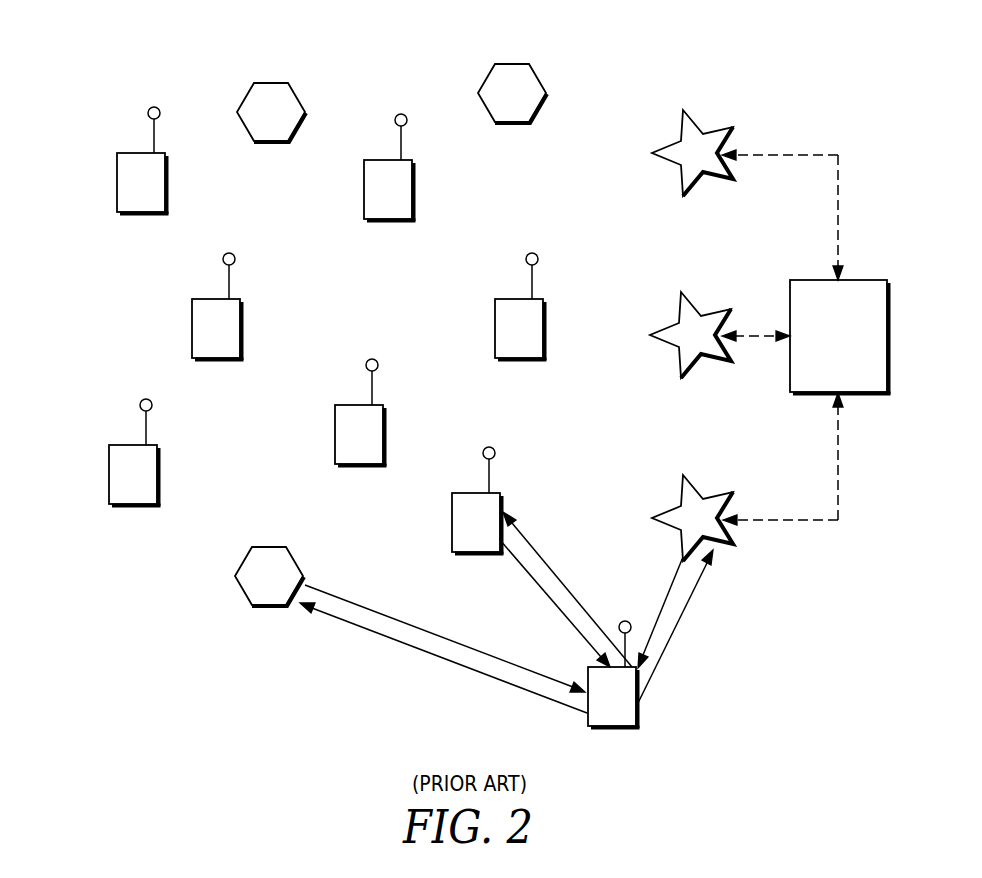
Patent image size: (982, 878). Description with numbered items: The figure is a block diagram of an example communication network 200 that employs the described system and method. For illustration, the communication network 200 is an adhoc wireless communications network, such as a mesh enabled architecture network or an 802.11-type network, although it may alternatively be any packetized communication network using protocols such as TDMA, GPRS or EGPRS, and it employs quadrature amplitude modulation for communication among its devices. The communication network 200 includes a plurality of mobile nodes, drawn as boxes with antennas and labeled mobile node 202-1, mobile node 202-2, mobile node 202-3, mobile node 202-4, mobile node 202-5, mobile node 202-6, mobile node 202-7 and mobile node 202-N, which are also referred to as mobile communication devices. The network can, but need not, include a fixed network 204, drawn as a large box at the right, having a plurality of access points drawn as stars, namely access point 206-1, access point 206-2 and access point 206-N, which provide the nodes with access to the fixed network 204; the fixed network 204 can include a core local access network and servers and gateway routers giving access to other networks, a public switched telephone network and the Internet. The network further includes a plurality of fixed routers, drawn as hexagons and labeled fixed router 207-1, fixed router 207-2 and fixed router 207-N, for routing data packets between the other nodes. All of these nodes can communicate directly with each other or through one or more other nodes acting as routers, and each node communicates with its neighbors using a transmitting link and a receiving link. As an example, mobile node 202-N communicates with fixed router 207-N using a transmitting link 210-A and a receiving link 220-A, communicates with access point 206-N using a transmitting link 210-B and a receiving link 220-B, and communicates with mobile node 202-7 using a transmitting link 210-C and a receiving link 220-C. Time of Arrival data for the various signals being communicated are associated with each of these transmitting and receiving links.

The communication network 200 is at (812, 36).
The mobile node 202-1 is at (127, 153).
The mobile node 202-2 is at (374, 160).
The mobile node 202-3 is at (200, 299).
The mobile node 202-4 is at (127, 445).
The mobile node 202-5 is at (343, 405).
The mobile node 202-6 is at (502, 299).
The mobile node 202-7 is at (460, 493).
The mobile node 202-N is at (613, 728).
The fixed network 204 is at (802, 278).
The access point 206-1 is at (665, 145).
The access point 206-2 is at (662, 325).
The access point 206-N is at (665, 508).
The fixed router 207-1 is at (257, 83).
The fixed router 207-2 is at (497, 65).
The fixed router 207-N is at (256, 548).
The transmitting link 210-A is at (443, 660).
The transmitting link 210-B is at (683, 622).
The transmitting link 210-C is at (538, 548).
The receiving link 220-A is at (392, 615).
The receiving link 220-B is at (677, 587).
The receiving link 220-C is at (570, 622).